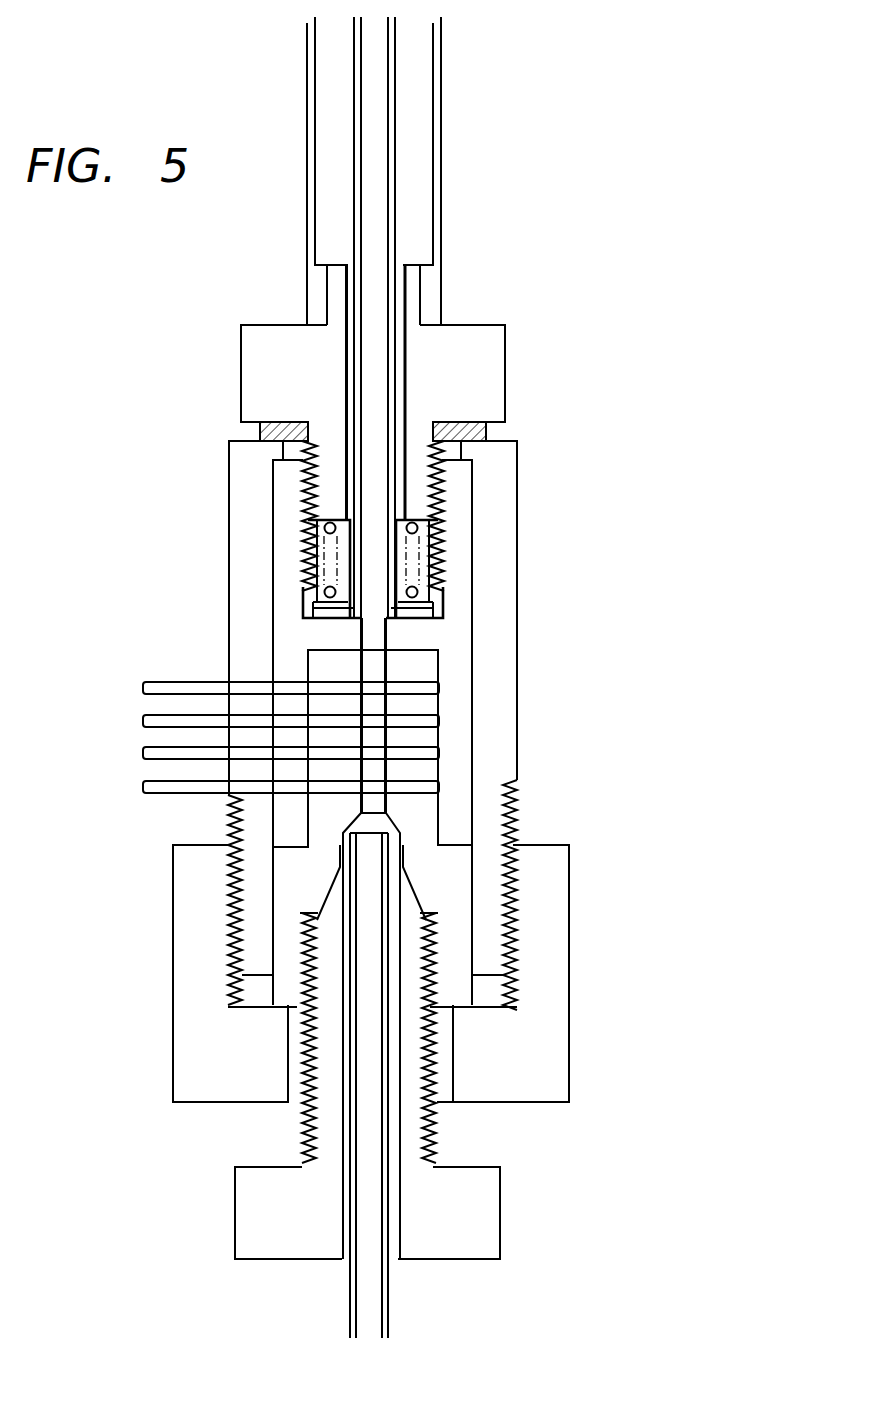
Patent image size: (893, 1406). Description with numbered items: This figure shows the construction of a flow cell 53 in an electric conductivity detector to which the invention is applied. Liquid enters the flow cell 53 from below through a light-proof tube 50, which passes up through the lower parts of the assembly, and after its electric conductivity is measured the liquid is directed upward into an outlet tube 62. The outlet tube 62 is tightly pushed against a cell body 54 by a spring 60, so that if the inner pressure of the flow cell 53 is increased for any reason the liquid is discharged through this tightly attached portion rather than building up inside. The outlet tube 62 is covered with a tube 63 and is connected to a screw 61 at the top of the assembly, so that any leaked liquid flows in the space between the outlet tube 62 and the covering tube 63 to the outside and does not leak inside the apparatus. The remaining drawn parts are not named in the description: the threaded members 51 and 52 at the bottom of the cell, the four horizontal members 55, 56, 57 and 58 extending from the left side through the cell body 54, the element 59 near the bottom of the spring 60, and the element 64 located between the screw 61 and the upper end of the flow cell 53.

The light-proof tube 50 is at (388, 1320).
The lower nut 51 is at (500, 1238).
The mounting block 52 is at (558, 1102).
The flow cell 53 is at (517, 728).
The cell body 54 is at (476, 617).
The electrode rod 55 is at (143, 790).
The electrode rod 56 is at (143, 753).
The electrode rod 57 is at (143, 720).
The electrode rod 58 is at (143, 688).
The bearing plate 59 is at (305, 607).
The spring 60 is at (300, 533).
The screw 61 is at (506, 338).
The outlet tube 62 is at (350, 232).
The tube 63 is at (443, 233).
The seal 64 is at (487, 432).